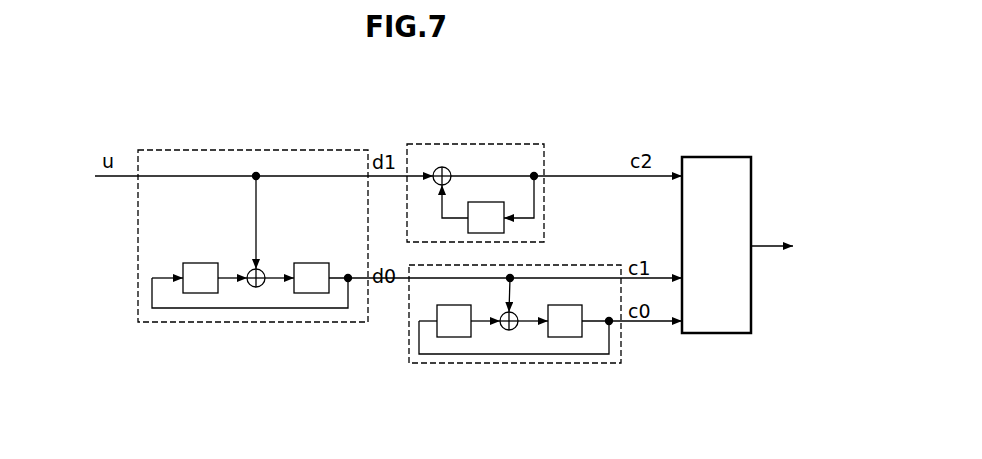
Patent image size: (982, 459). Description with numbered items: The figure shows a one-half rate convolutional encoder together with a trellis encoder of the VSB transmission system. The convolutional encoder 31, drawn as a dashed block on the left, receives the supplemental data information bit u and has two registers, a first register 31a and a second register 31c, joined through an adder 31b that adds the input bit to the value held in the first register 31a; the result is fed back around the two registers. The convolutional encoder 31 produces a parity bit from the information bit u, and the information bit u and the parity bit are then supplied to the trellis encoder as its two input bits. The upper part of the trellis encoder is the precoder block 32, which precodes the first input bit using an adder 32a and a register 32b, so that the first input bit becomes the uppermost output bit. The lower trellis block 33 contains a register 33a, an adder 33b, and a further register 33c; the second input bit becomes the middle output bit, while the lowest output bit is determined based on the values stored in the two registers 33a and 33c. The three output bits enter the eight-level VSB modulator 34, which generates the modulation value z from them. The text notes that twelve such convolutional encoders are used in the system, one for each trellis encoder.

The first convolutional encoder (d1 path) 31 is at (253, 233).
The delay element s4 31a is at (195, 262).
The adder (modulo-2) 31b is at (262, 268).
The delay element s3 31c is at (316, 293).
The second encoder (c2 path) 32 is at (501, 162).
The adder (modulo-2) 32a is at (453, 173).
The delay element s2 32b is at (500, 233).
The third encoder (c1/c0 path) 33 is at (474, 342).
The delay element s1 33a is at (452, 337).
The adder (modulo-2) 33b is at (514, 330).
The delay element s0 33c is at (573, 337).
The 8T-VSB mapper 34 is at (717, 334).